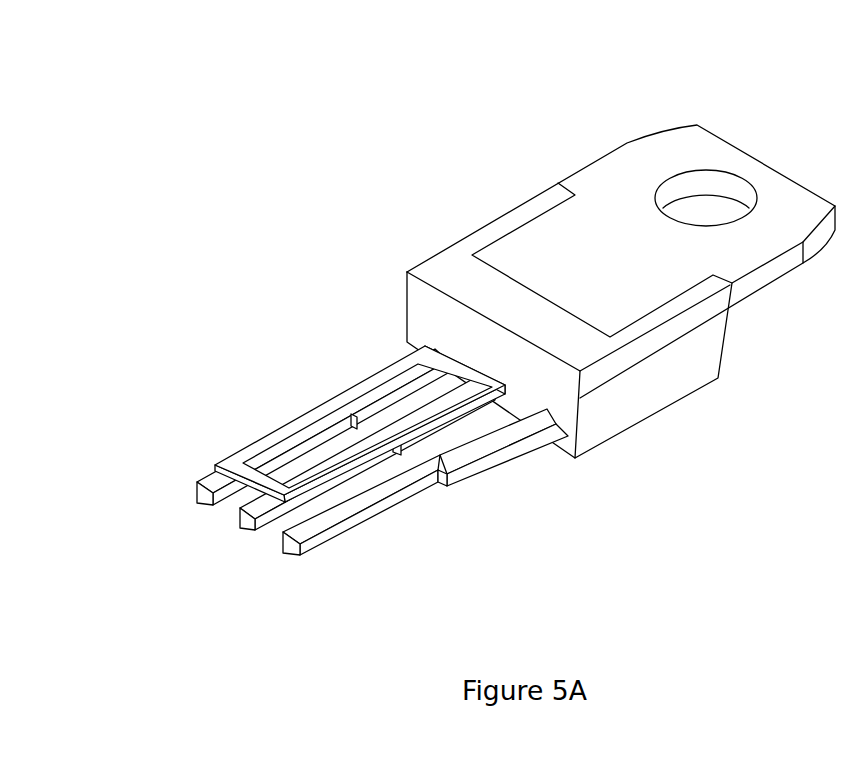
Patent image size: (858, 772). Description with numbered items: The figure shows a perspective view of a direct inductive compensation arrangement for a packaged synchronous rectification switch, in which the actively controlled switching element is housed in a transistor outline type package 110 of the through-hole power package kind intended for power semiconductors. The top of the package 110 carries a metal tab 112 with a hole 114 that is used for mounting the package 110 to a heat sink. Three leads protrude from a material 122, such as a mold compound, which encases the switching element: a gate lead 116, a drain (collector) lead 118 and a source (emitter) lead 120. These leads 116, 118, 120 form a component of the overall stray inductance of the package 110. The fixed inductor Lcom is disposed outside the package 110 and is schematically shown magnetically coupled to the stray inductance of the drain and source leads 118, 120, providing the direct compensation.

The TO type package 110 is at (510, 344).
The metal tab 112 is at (621, 224).
The hole 114 is at (707, 205).
The gate lead 116 is at (408, 487).
The drain (collector) lead 118 is at (248, 518).
The source (emitter) lead 120 is at (200, 505).
The material 122 is at (438, 265).
The fixed inductor Lcom is at (303, 395).